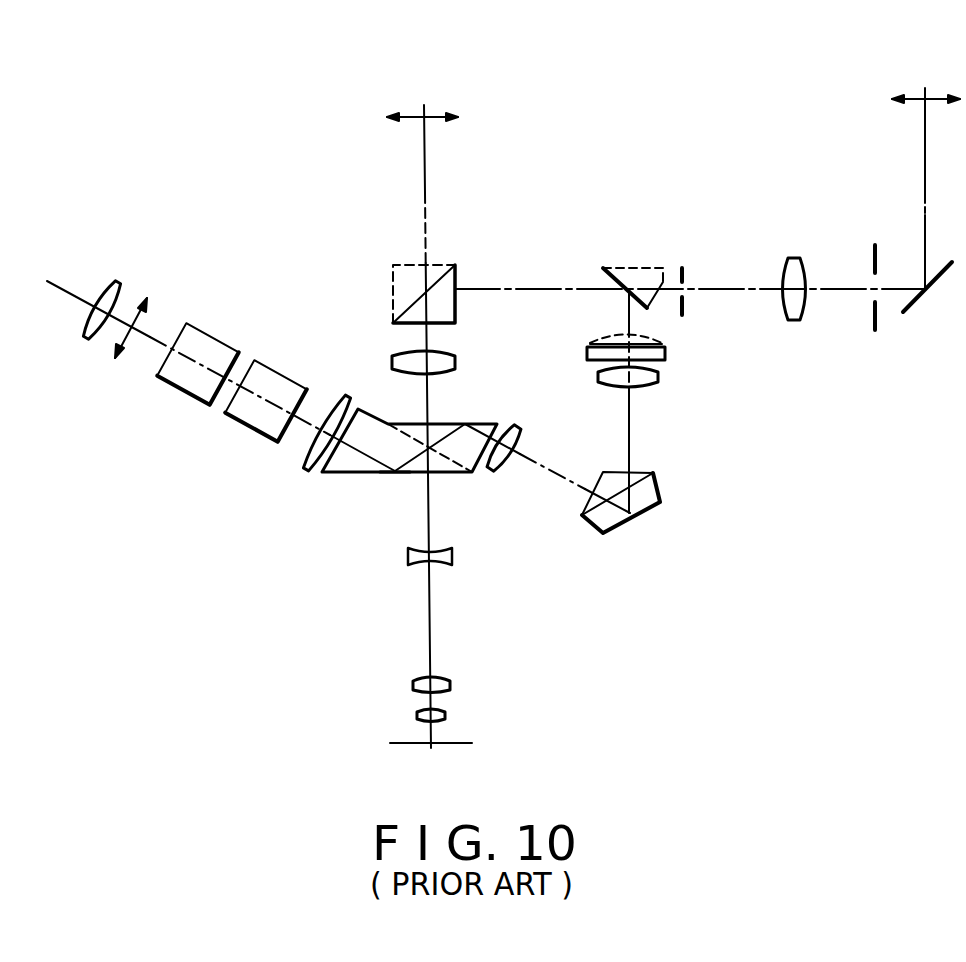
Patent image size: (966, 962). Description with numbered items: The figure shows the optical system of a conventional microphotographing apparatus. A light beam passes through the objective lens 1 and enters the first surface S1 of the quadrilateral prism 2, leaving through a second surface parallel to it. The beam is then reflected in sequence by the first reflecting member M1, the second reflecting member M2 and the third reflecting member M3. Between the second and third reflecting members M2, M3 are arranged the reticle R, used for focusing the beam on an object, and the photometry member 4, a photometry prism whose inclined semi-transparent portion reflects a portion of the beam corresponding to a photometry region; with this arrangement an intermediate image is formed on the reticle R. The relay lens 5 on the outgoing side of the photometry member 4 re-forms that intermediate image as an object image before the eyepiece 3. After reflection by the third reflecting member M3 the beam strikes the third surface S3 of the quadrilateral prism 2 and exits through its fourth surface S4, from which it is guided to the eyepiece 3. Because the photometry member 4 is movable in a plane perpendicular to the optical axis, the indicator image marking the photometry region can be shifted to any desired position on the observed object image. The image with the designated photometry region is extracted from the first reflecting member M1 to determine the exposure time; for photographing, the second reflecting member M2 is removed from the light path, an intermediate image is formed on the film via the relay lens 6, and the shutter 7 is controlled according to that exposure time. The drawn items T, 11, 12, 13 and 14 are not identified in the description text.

The objective lens 1 is at (460, 672).
The quadrilateral prism 2 is at (368, 475).
The eyepiece 3 is at (112, 288).
The photometry member 4 is at (665, 358).
The relay lens 5 is at (650, 385).
The relay lens 6 is at (793, 262).
The shutter 7 is at (875, 337).
The reference pattern 11 is at (607, 337).
The moving direction 12 is at (142, 312).
The aperture 13 is at (682, 270).
The moving direction 14 is at (917, 92).
The first reflecting member M1 is at (392, 293).
The second reflecting member M2 is at (603, 278).
The third reflecting member M3 is at (635, 518).
The first surface S1 is at (395, 473).
The third surface S3 is at (483, 460).
The fourth surface S4 is at (333, 475).
The test object T is at (221, 391).
The reticle R is at (643, 337).